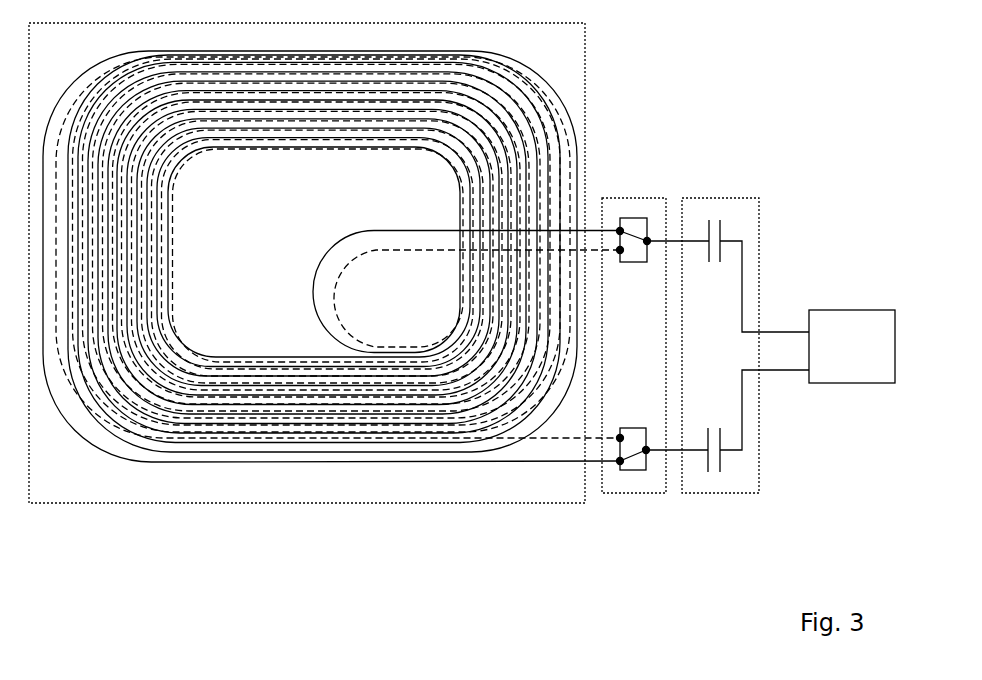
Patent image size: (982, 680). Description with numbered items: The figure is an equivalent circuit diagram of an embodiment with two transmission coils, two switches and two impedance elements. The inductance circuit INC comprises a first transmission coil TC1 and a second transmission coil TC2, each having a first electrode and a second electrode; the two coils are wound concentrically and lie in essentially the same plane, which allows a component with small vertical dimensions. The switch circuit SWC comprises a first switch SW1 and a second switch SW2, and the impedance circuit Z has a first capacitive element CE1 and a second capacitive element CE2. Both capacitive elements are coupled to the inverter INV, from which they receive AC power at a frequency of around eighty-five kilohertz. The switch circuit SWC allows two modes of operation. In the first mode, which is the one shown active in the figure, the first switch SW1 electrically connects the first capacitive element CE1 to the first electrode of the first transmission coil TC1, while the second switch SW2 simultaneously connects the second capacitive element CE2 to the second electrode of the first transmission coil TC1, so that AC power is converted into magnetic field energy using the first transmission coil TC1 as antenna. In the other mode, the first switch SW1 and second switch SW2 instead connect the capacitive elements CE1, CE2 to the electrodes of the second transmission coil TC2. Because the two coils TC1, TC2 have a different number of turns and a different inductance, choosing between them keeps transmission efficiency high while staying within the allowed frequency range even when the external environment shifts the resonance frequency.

The inductance circuit INC is at (585, 50).
The first transmission coil TC1 is at (332, 246).
The second transmission coil TC2 is at (342, 267).
The switch circuit SWC is at (655, 354).
The first switch SW1 is at (633, 218).
The second switch SW2 is at (623, 428).
The impedance circuit Z is at (757, 393).
The first capacitive element CE1 is at (720, 227).
The second capacitive element CE2 is at (722, 462).
The inverter INV is at (893, 383).